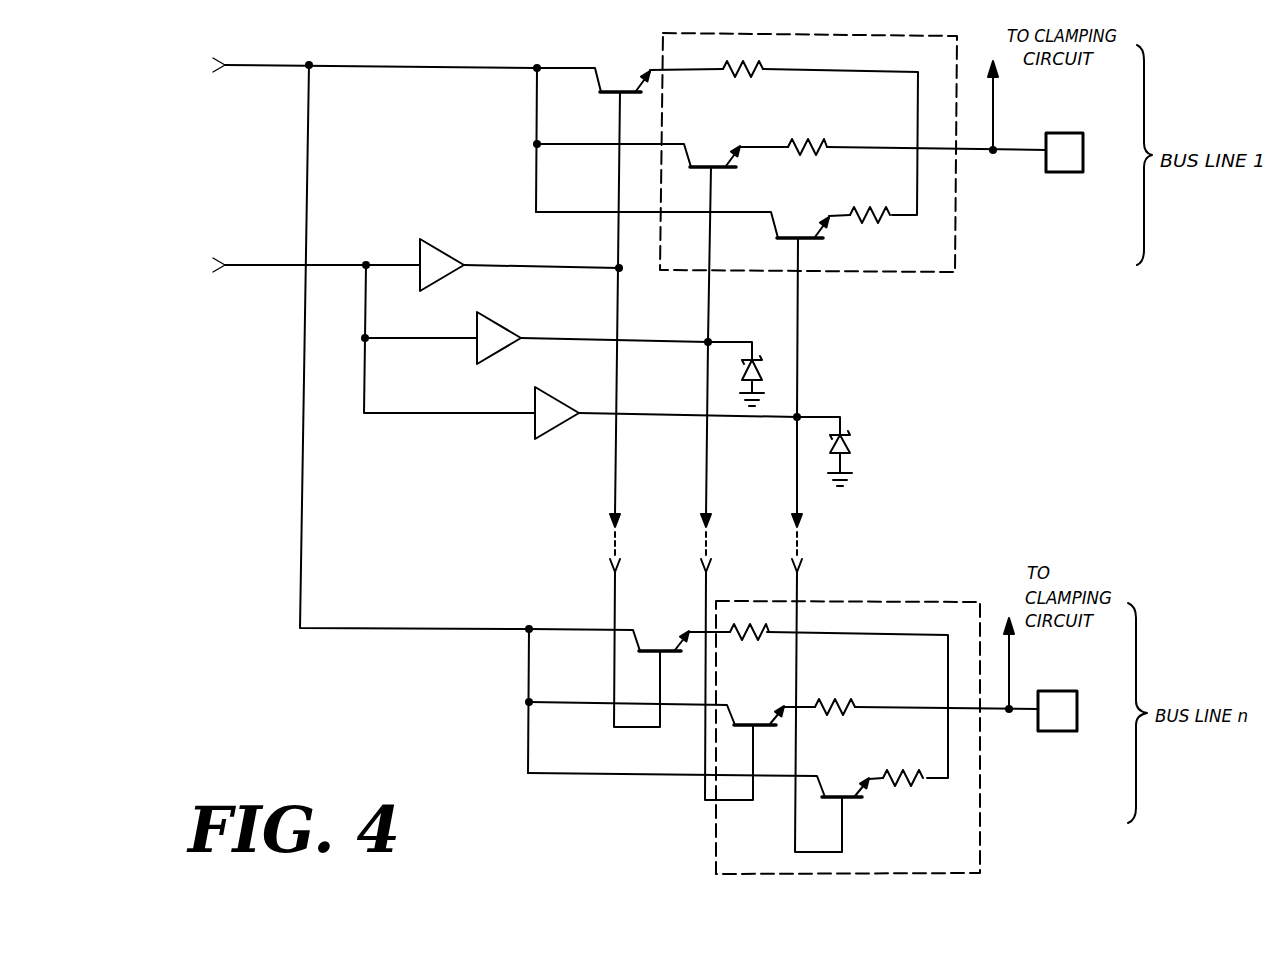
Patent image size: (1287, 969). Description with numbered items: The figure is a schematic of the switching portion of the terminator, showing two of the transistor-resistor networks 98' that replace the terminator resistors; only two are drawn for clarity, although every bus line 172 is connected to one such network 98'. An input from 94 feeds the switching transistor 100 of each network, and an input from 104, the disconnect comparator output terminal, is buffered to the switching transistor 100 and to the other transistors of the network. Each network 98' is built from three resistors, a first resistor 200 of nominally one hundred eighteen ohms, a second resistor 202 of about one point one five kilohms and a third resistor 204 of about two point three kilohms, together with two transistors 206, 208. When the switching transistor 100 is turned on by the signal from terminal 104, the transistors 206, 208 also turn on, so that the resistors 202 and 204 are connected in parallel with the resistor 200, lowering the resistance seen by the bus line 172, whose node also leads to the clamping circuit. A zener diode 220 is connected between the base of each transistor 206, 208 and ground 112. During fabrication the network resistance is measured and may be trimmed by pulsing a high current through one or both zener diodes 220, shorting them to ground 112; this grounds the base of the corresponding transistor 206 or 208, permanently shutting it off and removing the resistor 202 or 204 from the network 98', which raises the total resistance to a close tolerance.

The input from 94 is at (172, 63).
The disconnect comparator output terminal 104 is at (171, 262).
The transistor-resistor network 98' is at (820, 439).
The switching transistor 100 is at (623, 82).
The first resistor 200 is at (764, 68).
The second resistor 202 is at (828, 145).
The third resistor 204 is at (878, 220).
The transistor 206 is at (737, 168).
The transistor 208 is at (816, 240).
The bus line 172 is at (1073, 133).
The zener diode 220 is at (768, 366).
The ground 112 is at (770, 400).